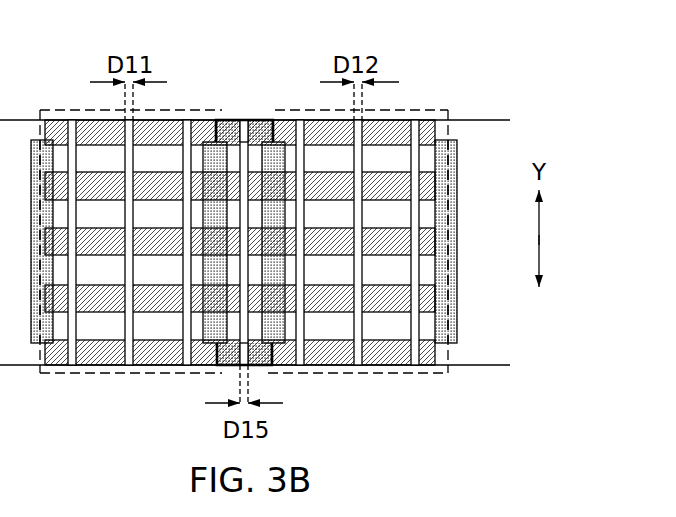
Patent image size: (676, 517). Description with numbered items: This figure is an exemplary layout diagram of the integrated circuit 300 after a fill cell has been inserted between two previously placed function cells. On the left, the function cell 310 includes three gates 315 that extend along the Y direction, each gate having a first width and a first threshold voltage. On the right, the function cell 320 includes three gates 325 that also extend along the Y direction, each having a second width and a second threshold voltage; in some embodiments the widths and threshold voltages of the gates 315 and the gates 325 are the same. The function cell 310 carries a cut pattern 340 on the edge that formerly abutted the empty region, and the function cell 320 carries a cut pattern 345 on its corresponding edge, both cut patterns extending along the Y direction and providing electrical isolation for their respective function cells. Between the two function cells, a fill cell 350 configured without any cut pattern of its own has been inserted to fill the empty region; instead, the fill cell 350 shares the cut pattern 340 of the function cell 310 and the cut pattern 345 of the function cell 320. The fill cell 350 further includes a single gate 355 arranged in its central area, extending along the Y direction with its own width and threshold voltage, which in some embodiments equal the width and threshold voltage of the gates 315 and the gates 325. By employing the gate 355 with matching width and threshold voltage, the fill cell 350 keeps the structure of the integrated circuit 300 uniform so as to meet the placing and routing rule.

The integrated circuit 300 is at (565, 52).
The function cell 310 is at (40, 110).
The gates 315 is at (128, 357).
The function cell 320 is at (448, 110).
The gates 325 is at (358, 357).
The cut pattern 340 is at (206, 352).
The cut pattern 345 is at (278, 350).
The fill cell 350 is at (268, 128).
The gate 355 is at (245, 130).